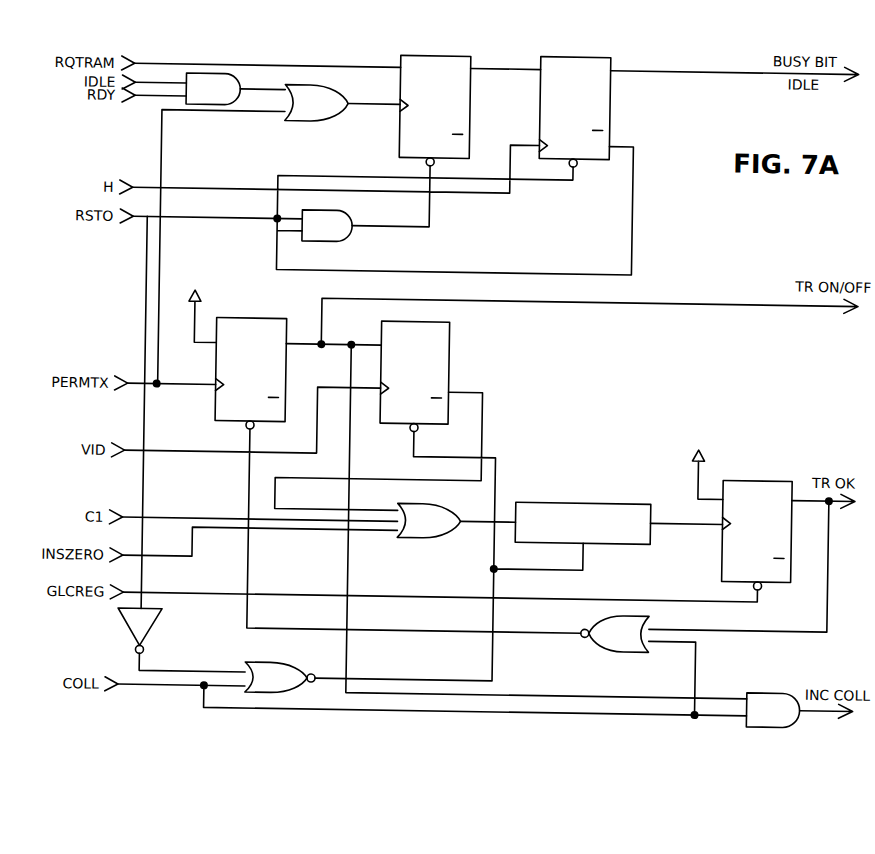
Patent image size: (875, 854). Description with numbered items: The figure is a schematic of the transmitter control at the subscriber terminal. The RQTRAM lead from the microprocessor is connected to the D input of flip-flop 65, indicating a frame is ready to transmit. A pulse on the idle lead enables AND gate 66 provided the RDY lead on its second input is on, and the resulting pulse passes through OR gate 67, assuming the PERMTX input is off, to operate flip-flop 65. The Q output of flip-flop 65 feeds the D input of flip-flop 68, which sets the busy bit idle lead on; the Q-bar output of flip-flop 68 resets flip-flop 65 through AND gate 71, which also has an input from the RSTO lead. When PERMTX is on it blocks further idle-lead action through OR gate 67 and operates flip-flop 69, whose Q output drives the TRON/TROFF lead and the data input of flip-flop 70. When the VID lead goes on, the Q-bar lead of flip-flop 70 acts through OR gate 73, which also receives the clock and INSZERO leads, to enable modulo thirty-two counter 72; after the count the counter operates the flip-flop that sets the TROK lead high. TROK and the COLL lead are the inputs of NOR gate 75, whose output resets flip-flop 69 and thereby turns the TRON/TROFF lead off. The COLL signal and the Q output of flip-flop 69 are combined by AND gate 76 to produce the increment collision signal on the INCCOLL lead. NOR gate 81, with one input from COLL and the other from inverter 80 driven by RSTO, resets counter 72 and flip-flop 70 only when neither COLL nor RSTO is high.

The flip-flop 65 is at (465, 120).
The AND gate 66 is at (227, 80).
The OR gate 67 is at (330, 90).
The flip-flop 68 is at (605, 127).
The flip-flop 69 is at (240, 321).
The flip-flop 70 is at (448, 358).
The AND gate 71 is at (343, 243).
The modulo 32 counter 72 is at (583, 501).
The OR gate 73 is at (775, 476).
The NOR gate 75 is at (606, 651).
The AND gate 76 is at (760, 688).
The inverter 80 is at (156, 625).
The NOR gate 81 is at (290, 665).